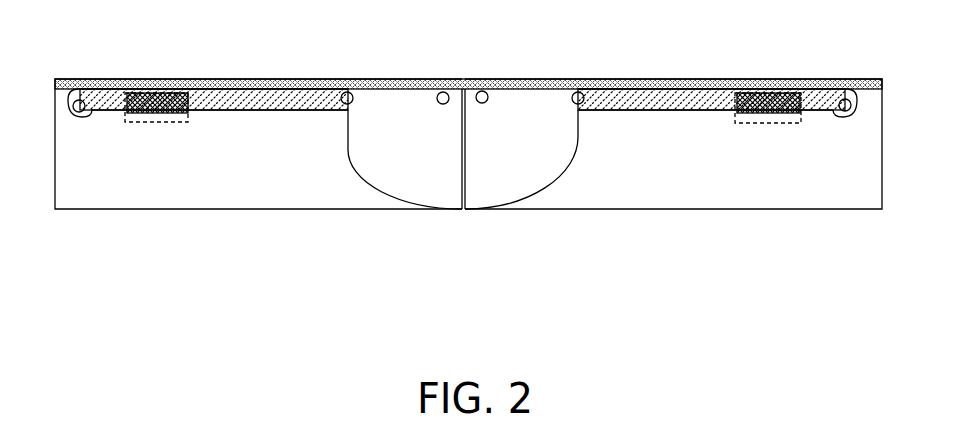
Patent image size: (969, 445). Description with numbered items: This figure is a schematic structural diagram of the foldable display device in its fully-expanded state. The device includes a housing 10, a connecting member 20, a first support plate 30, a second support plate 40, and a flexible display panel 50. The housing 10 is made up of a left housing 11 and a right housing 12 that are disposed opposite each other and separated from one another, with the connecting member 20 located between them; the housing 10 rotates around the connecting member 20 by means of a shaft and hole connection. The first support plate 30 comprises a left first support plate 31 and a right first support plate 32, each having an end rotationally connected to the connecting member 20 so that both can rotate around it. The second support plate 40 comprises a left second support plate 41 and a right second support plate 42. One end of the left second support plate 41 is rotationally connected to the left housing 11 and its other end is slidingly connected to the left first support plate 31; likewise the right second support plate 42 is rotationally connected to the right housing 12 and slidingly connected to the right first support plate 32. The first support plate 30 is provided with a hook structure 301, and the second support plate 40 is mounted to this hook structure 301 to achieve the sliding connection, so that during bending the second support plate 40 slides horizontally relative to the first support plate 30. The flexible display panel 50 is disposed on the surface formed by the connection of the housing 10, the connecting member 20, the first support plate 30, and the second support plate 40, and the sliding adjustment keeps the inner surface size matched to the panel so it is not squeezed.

The housing 10 is at (380, 303).
The left housing 11 is at (153, 207).
The right housing 12 is at (792, 207).
The connecting member 20 is at (575, 137).
The first support plate 30 is at (468, 305).
The left first support plate 31 is at (297, 108).
The right first support plate 32 is at (635, 108).
The second support plate 40 is at (563, 307).
The left second support plate 41 is at (105, 108).
The right second support plate 42 is at (823, 110).
The flexible display panel 50 is at (743, 87).
The hook structure 301 is at (178, 122).